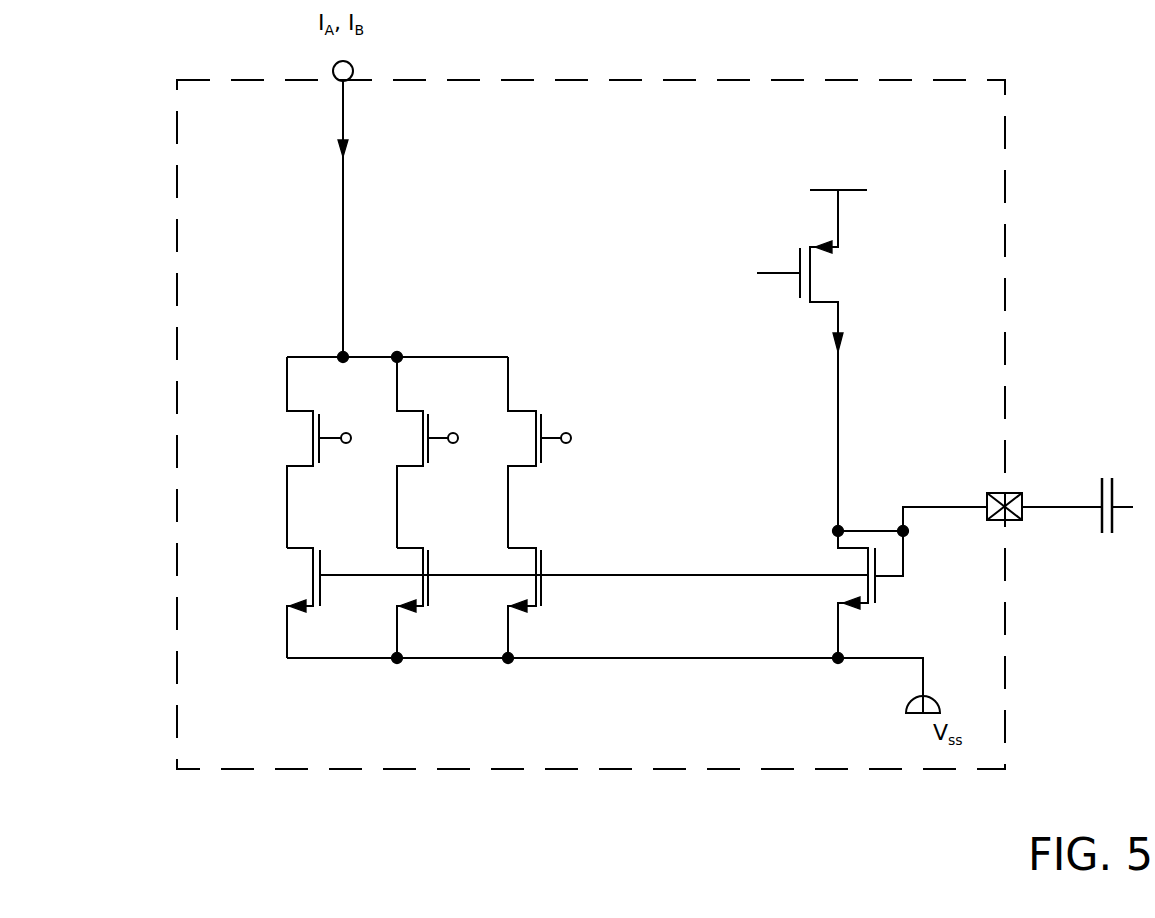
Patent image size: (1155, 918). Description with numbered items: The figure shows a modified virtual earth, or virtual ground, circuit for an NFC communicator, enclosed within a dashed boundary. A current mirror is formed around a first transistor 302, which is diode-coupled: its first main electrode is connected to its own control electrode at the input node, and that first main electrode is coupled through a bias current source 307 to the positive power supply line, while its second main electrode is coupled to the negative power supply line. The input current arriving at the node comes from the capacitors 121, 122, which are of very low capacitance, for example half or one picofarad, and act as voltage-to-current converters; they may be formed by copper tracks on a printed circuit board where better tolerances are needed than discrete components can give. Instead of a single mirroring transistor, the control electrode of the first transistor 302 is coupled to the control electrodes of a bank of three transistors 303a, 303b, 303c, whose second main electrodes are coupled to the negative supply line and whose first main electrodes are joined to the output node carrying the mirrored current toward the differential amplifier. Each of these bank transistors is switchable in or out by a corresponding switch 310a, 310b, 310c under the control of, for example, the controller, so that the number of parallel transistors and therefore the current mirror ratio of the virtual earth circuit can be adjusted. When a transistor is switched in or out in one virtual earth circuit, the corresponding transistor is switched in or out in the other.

The switch 310a is at (318, 410).
The switch 310b is at (422, 410).
The switch 310c is at (533, 410).
The transistor 303a is at (318, 552).
The transistor 303b is at (423, 551).
The transistor 303c is at (535, 551).
The bias current source 307 is at (822, 277).
The first transistor 302 is at (853, 558).
The capacitor 121 is at (1080, 547).
The capacitor 122 is at (1103, 535).